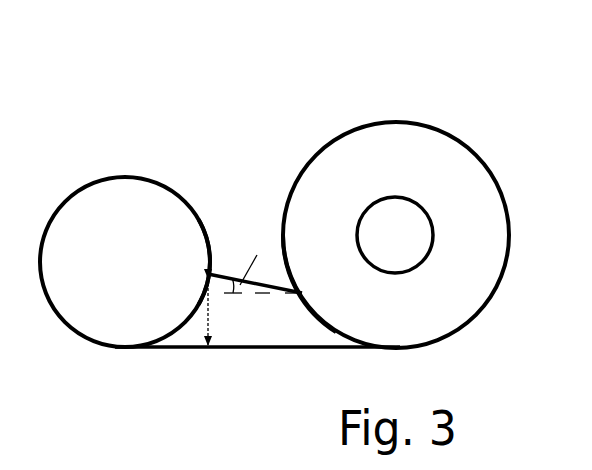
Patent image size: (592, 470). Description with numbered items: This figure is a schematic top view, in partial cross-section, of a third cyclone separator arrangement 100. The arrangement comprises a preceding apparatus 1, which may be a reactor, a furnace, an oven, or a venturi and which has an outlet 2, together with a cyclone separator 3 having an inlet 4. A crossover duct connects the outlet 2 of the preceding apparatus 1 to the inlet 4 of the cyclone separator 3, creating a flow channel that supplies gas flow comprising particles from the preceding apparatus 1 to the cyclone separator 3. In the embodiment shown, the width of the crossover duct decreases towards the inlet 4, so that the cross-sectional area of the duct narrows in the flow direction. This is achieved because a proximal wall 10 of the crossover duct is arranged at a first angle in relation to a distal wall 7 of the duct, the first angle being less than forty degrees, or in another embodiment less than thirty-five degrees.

The cyclone separator arrangement 100 is at (250, 82).
The preceding apparatus 1 is at (119, 218).
The outlet 2 is at (169, 294).
The cyclone separator 3 is at (382, 142).
The inlet 4 is at (355, 307).
The distal wall 7 is at (265, 347).
The proximal wall 10 is at (222, 273).